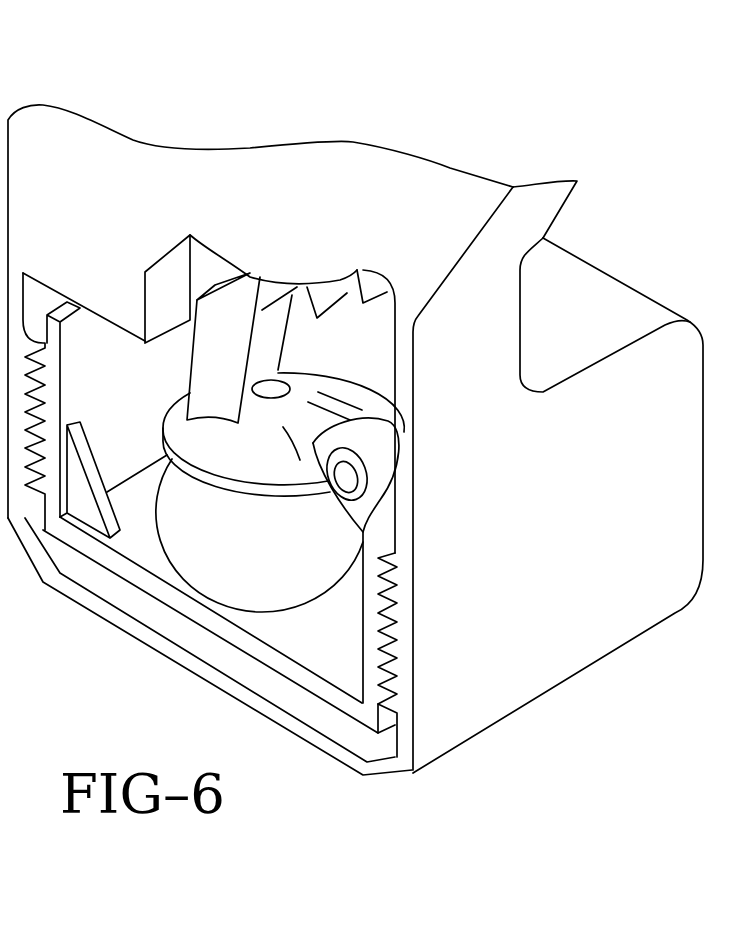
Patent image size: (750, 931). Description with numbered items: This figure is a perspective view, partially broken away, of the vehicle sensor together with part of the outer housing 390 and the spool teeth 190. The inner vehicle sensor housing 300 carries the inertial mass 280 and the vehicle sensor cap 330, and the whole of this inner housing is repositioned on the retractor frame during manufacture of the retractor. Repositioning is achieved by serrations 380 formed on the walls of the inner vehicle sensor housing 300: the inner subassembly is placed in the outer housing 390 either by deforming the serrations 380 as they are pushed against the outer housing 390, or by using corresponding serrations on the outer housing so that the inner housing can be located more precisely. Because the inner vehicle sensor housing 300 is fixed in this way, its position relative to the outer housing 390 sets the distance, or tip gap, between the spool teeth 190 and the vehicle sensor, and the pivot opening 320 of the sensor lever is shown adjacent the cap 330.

The spool teeth 190 is at (217, 283).
The inertial mass 280 is at (207, 577).
The inner vehicle sensor housing 300 is at (373, 637).
The pivot hole 320 is at (350, 477).
The vehicle sensor cap 330 is at (297, 387).
The serrations 380 is at (390, 610).
The outer housing 390 is at (600, 612).